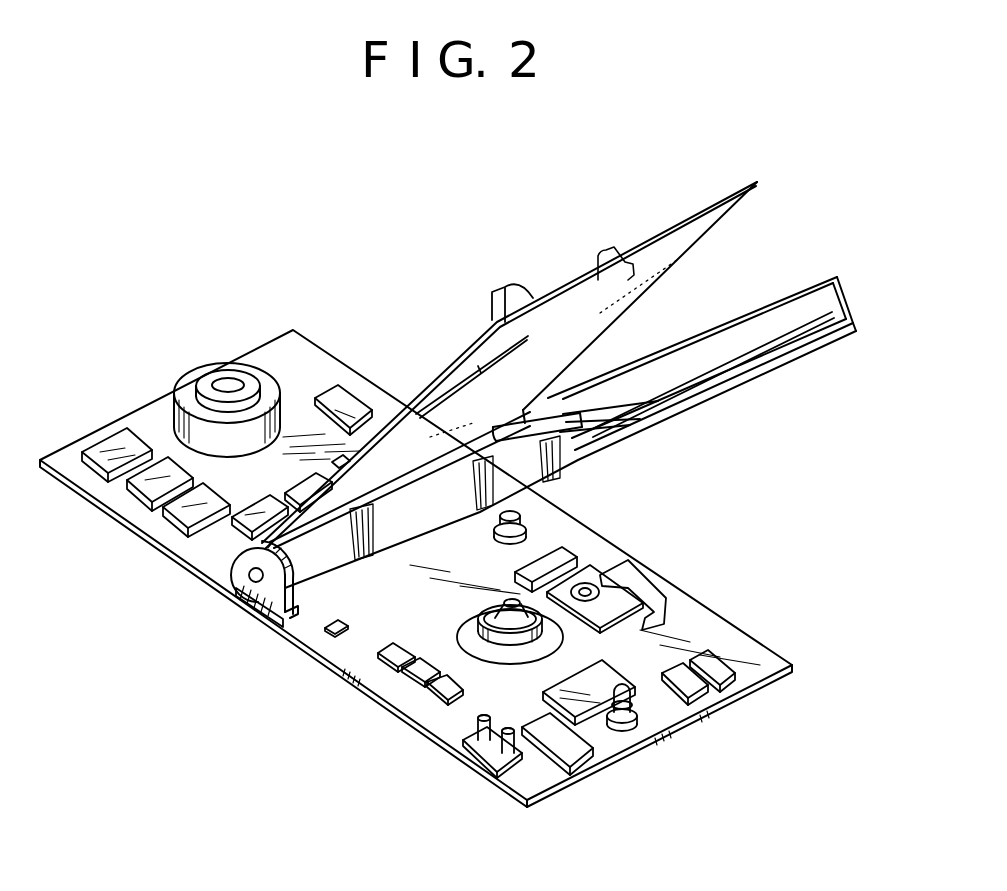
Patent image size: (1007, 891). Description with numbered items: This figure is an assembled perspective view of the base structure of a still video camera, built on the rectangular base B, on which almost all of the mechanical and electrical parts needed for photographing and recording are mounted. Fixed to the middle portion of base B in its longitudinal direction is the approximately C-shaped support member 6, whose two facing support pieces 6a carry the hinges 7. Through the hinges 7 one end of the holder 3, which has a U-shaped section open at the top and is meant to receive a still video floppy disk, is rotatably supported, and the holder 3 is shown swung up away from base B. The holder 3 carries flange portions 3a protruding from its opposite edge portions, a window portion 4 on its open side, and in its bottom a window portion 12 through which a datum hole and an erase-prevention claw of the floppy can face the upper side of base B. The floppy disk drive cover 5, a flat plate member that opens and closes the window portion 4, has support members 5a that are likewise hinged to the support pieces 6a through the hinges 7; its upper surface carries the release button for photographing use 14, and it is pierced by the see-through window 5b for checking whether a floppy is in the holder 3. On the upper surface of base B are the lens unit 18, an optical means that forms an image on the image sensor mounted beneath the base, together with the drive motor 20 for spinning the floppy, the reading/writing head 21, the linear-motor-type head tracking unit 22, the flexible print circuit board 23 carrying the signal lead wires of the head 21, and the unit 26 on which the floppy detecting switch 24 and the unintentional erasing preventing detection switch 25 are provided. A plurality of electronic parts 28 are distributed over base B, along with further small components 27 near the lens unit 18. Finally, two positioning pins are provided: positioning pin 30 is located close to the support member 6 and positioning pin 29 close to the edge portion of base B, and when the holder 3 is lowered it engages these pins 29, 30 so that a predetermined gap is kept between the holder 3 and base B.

The base B is at (665, 710).
The holder 3 is at (848, 303).
The flange portions 3a is at (812, 288).
The window portion 4 is at (747, 314).
The floppy disk drive cover 5 is at (585, 263).
The support members 5a is at (292, 590).
The see-through window 5b is at (478, 340).
The support member 6 is at (270, 605).
The support pieces 6a is at (262, 602).
The hinges 7 is at (243, 607).
The window portion 12 is at (630, 420).
The release button for photographing use 14 is at (513, 300).
The lens unit 18 is at (265, 388).
The drive motor 20 is at (510, 658).
The reading/writing head 21 is at (590, 572).
The head tracking unit 22 is at (600, 590).
The flexible print circuit board 23 is at (650, 606).
The floppy detecting switch 24 is at (508, 758).
The unintentional erasing preventing detection switch 25 is at (475, 742).
The unit 26 is at (527, 802).
The chip component 27 is at (346, 407).
The electronic parts 28 is at (432, 695).
The positioning pin 29 is at (622, 725).
The positioning pin 30 is at (520, 522).